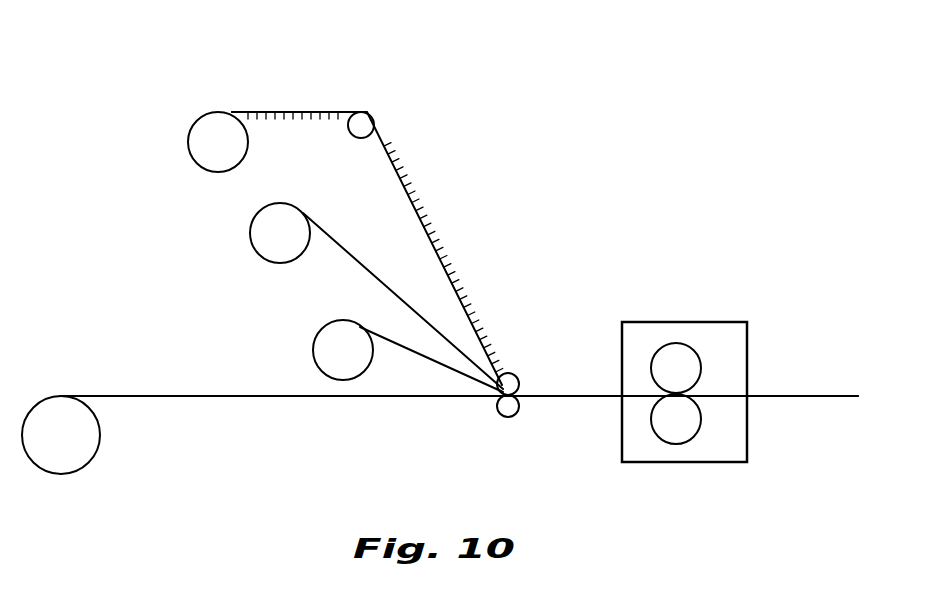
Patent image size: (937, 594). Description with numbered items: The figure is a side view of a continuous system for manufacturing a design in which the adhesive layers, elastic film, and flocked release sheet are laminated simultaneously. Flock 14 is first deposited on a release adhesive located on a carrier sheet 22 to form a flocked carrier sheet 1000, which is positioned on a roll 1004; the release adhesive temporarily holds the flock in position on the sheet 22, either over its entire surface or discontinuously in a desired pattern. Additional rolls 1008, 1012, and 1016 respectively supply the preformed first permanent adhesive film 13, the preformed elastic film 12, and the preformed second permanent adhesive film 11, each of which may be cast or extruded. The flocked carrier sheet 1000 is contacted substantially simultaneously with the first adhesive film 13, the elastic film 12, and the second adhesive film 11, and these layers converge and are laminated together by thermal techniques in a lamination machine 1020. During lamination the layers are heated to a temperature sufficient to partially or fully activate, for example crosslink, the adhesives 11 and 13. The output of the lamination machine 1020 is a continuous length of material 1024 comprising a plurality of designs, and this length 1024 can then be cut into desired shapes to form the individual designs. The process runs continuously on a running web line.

The flocked carrier sheet 1000 is at (270, 112).
The carrier sheet 22 is at (232, 112).
The roll 1004 is at (188, 138).
The flock 14 is at (287, 118).
The roll 1008 is at (250, 233).
The first permanent adhesive film 13 is at (343, 252).
The roll 1012 is at (313, 347).
The elastic film 12 is at (408, 350).
The second permanent adhesive film 11 is at (135, 397).
The roll 1016 is at (97, 450).
The lamination machine 1020 is at (650, 322).
The continuous length of material 1024 is at (788, 393).